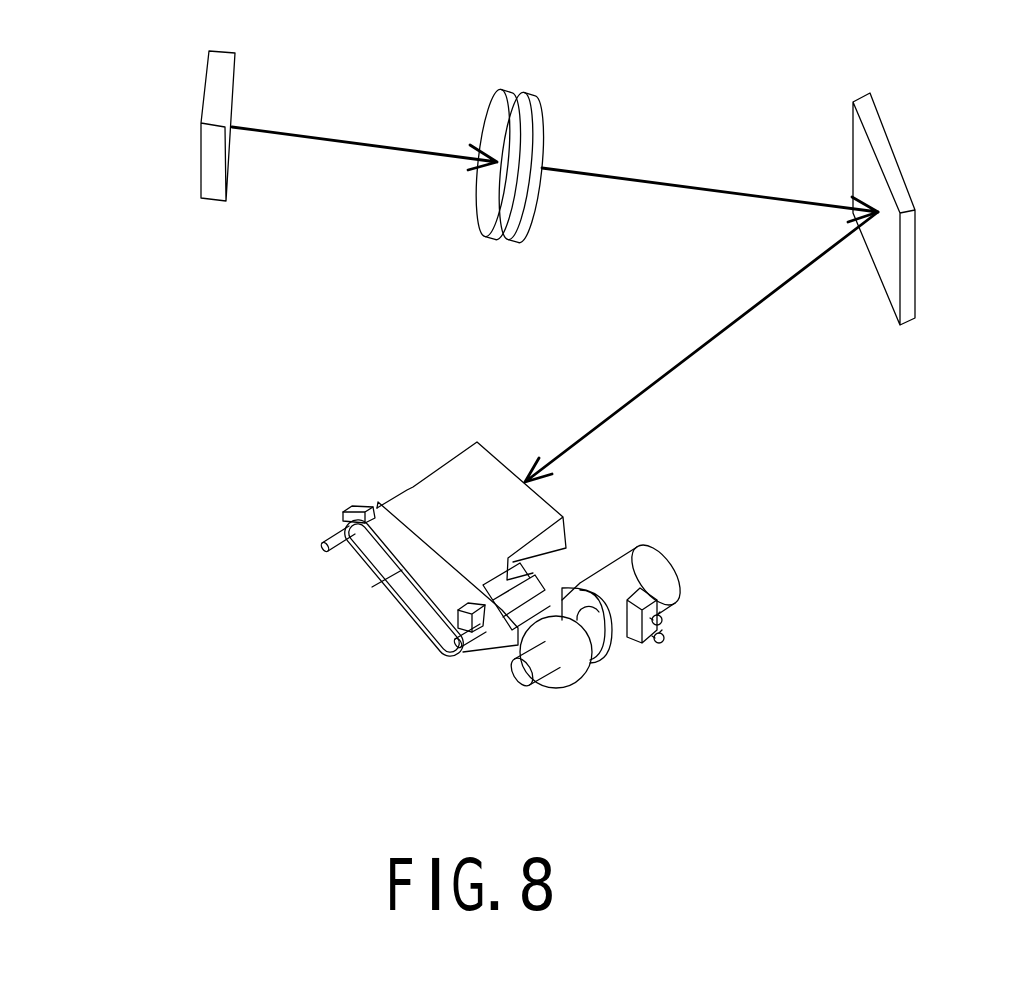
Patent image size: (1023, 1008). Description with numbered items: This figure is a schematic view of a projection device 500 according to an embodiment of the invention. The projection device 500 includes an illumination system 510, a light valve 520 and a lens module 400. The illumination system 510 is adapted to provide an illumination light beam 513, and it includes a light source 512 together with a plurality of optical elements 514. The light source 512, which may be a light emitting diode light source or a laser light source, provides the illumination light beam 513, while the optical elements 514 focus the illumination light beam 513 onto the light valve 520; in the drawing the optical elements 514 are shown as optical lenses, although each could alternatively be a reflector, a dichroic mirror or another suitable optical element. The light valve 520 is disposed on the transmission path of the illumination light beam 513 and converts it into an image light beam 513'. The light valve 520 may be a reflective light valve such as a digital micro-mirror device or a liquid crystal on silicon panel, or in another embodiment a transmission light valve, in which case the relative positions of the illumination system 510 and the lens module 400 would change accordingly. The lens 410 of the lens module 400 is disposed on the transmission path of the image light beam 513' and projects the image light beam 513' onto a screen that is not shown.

The projection device 500 is at (530, 801).
The illumination system 510 is at (378, 291).
The light source 512 is at (215, 182).
The illumination light beam 513 is at (555, 145).
The image light beam 513' is at (701, 347).
The optical elements 514 is at (485, 202).
The light valve 520 is at (895, 178).
The lens module 400 is at (798, 618).
The lens 410 is at (497, 472).